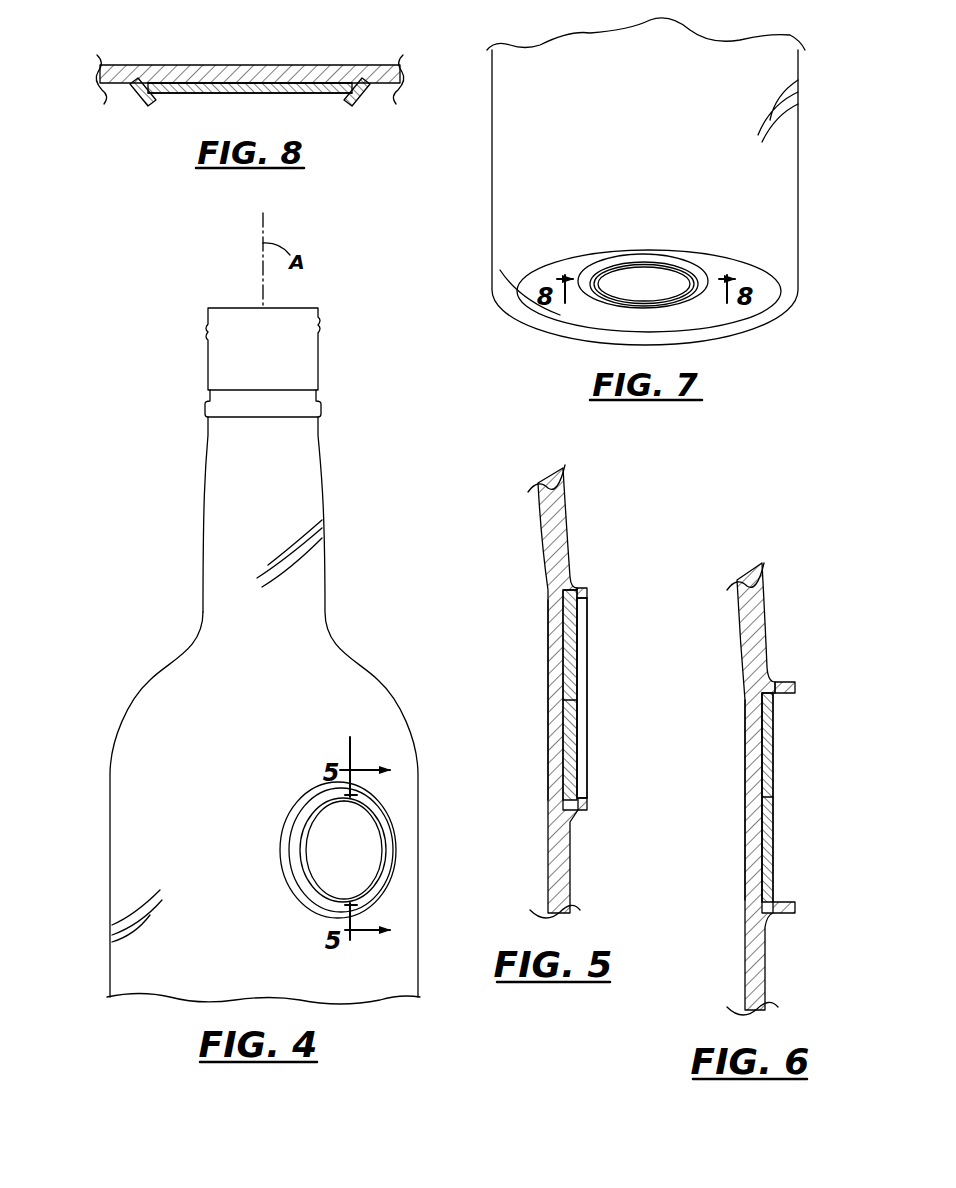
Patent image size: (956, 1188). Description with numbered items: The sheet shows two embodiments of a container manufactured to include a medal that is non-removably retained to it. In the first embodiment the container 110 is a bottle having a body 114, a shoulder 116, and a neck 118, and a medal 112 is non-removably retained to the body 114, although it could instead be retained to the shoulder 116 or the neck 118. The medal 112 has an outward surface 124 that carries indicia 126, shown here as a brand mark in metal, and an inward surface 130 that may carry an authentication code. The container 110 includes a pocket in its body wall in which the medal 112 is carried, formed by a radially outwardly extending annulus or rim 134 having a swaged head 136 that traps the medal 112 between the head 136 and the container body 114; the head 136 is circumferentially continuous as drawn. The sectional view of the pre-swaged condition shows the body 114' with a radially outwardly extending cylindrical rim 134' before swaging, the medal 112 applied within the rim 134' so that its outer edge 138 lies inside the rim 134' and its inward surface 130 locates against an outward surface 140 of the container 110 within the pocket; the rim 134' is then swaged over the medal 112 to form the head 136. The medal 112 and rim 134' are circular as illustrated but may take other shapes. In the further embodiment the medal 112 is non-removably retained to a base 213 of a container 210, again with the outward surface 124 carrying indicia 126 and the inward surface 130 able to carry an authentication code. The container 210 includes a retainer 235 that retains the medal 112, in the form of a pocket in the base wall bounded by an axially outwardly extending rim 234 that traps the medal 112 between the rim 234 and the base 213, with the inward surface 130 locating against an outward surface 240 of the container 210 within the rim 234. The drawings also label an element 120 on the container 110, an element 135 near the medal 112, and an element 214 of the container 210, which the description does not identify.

In FIG. 4, the container 110 is at (150, 458).
In FIG. 5, the container 110 is at (585, 495).
In FIG. 6, the container 110 is at (780, 575).
In FIG. 8, the medal 112 is at (330, 95).
In FIG. 7, the medal 112 is at (607, 293).
In FIG. 4, the medal 112 is at (380, 838).
In FIG. 5, the medal 112 is at (582, 680).
In FIG. 6, the medal 112 is at (782, 772).
In FIG. 4, the container body 114 is at (107, 899).
In FIG. 5, the container body 114 is at (588, 651).
In FIG. 6, the container body in pre-swaged condition 114' is at (790, 739).
In FIG. 4, the shoulder 116 is at (152, 647).
In FIG. 4, the neck 118 is at (180, 535).
In FIG. 4, the cap / closure 120 is at (185, 356).
In FIG. 7, the outward surface 124 is at (638, 300).
In FIG. 4, the outward surface 124 is at (357, 888).
In FIG. 5, the outward surface 124 is at (577, 740).
In FIG. 6, the outward surface 124 is at (773, 840).
In FIG. 7, the indicia 126 is at (660, 292).
In FIG. 4, the indicia 126 is at (362, 862).
In FIG. 8, the inward surface 130 is at (255, 83).
In FIG. 5, the inward surface 130 is at (562, 752).
In FIG. 6, the inward surface 130 is at (762, 862).
In FIG. 4, the rim 134 is at (341, 812).
In FIG. 5, the rim 134 is at (609, 579).
In FIG. 6, the cylindrical rim before swaging 134' is at (794, 662).
In FIG. 4, the recess in container wall 135 is at (287, 885).
In FIG. 5, the recess in container wall 135 is at (593, 817).
In FIG. 4, the swaged head 136 is at (383, 810).
In FIG. 5, the swaged head 136 is at (590, 600).
In FIG. 6, the outer edge 138 is at (772, 905).
In FIG. 5, the outward surface of the container 140 is at (565, 700).
In FIG. 6, the outward surface of the container 140 is at (765, 797).
In FIG. 7, the container 210 is at (745, 20).
In FIG. 8, the base 213 is at (160, 117).
In FIG. 7, the base 213 is at (483, 322).
In FIG. 7, the container side wall 214 is at (825, 170).
In FIG. 8, the rim 234 is at (362, 100).
In FIG. 7, the rim 234 is at (672, 262).
In FIG. 8, the retainer 235 is at (138, 106).
In FIG. 7, the retainer 235 is at (702, 260).
In FIG. 8, the outward surface of the container 240 is at (272, 93).